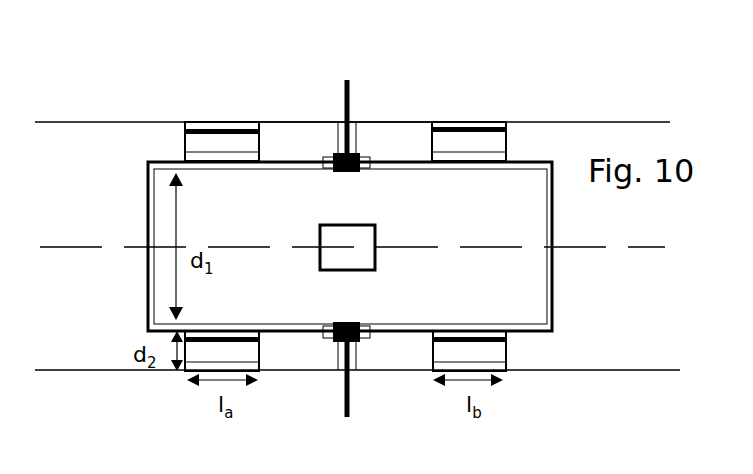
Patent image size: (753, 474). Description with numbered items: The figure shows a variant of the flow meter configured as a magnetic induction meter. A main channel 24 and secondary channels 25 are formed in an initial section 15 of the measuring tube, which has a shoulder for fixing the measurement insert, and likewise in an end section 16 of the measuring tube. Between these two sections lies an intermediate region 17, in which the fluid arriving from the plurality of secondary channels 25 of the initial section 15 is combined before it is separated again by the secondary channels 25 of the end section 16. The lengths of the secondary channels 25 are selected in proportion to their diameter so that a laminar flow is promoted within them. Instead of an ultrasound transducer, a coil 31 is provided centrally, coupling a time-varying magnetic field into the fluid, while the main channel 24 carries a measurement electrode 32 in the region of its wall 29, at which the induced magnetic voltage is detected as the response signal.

The initial section 15 is at (465, 121).
The end section 16 is at (218, 122).
The intermediate region 17 is at (289, 148).
The main channel 24 is at (497, 293).
The secondary channels 25 is at (243, 352).
The wall 29 is at (388, 325).
The coil 31 is at (378, 231).
The measurement electrode 32 is at (348, 73).